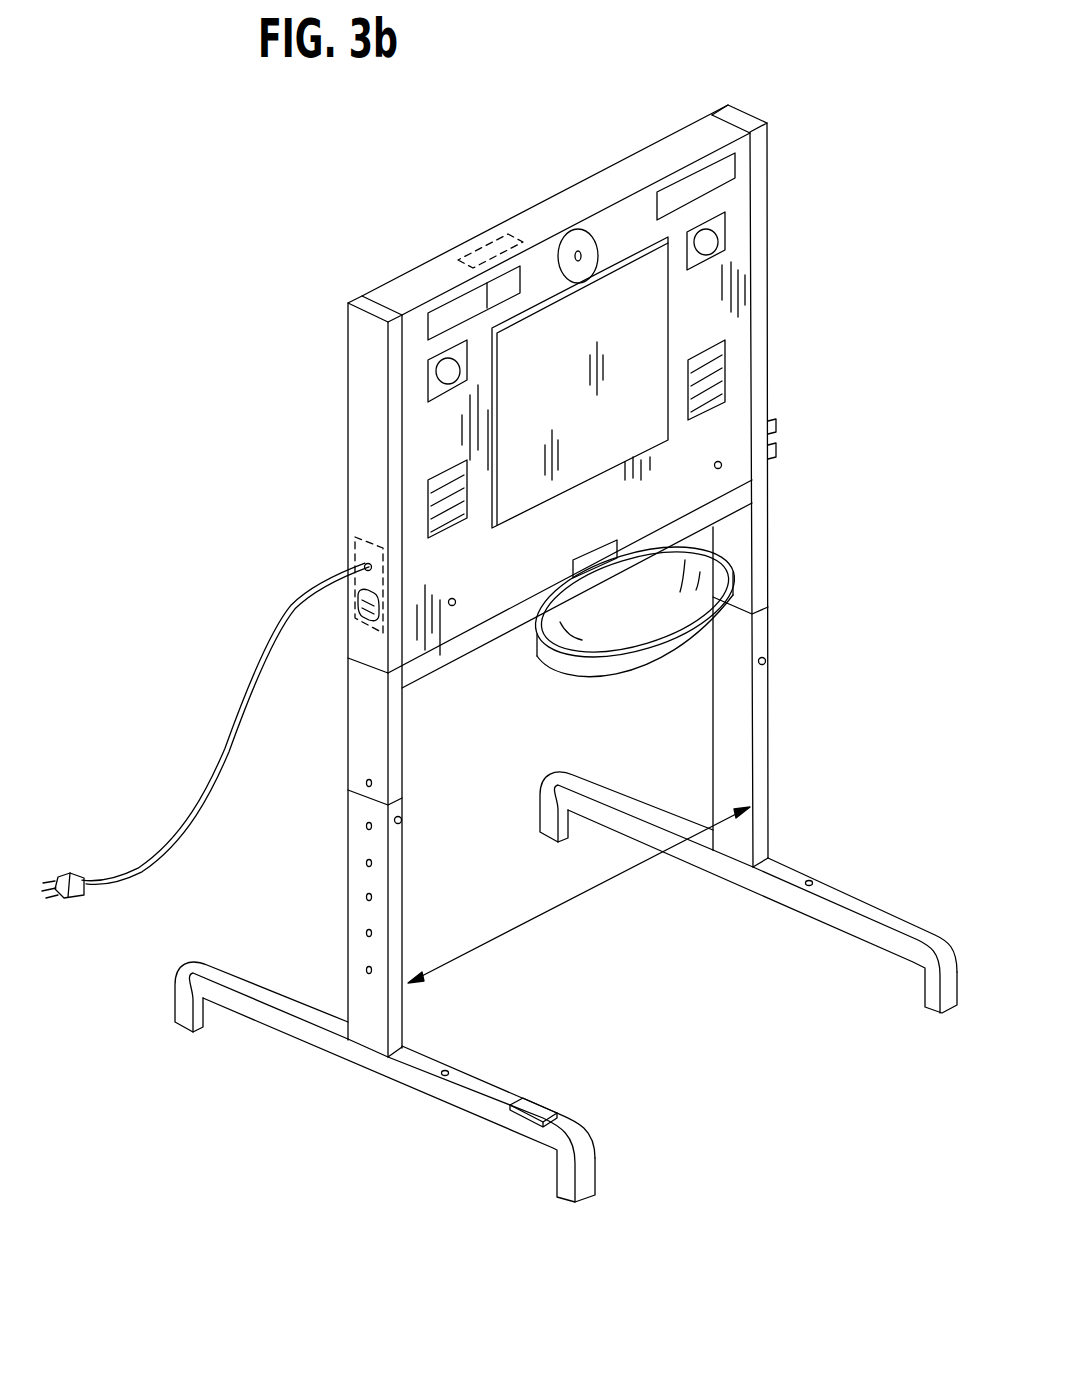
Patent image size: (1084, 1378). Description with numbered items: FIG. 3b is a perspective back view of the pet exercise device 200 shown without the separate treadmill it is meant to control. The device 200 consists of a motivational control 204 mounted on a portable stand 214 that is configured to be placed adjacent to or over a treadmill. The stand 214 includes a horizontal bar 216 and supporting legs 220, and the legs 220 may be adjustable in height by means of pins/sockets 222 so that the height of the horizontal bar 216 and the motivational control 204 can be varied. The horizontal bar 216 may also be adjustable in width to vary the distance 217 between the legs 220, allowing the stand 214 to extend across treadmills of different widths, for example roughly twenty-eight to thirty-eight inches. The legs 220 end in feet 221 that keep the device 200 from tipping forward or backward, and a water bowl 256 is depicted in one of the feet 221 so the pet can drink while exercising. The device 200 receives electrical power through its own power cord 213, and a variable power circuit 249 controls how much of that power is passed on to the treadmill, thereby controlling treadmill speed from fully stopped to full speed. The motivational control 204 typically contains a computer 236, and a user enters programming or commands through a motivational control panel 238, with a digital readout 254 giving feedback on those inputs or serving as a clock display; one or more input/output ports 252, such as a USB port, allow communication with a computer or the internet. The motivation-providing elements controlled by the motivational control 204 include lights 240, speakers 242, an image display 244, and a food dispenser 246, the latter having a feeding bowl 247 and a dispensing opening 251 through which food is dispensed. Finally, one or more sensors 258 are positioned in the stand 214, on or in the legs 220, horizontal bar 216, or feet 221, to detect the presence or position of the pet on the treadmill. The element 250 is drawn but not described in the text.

The device 200 is at (457, 253).
The motivational control 204 is at (627, 158).
The power cord 213 is at (130, 870).
The stand 214 is at (358, 730).
The horizontal bar 216 is at (725, 512).
The distance 217 is at (608, 883).
The supporting legs 220 is at (765, 688).
The feet 221 is at (872, 912).
The pins/sockets 222 is at (372, 826).
The computer 236 is at (500, 236).
The motivational control panel 238 is at (427, 300).
The lights 240 is at (723, 240).
The speakers 242 is at (723, 378).
The image display 244 is at (635, 325).
The food dispenser 246 is at (635, 620).
The feeding bowl 247 is at (598, 650).
The variable power circuit 249 is at (356, 545).
The camera disk 250 is at (573, 233).
The dispensing opening 251 is at (613, 542).
The input/output ports 252 is at (778, 427).
The digital readout 254 is at (452, 313).
The water bowl 256 is at (530, 1107).
The sensors 258 is at (722, 465).